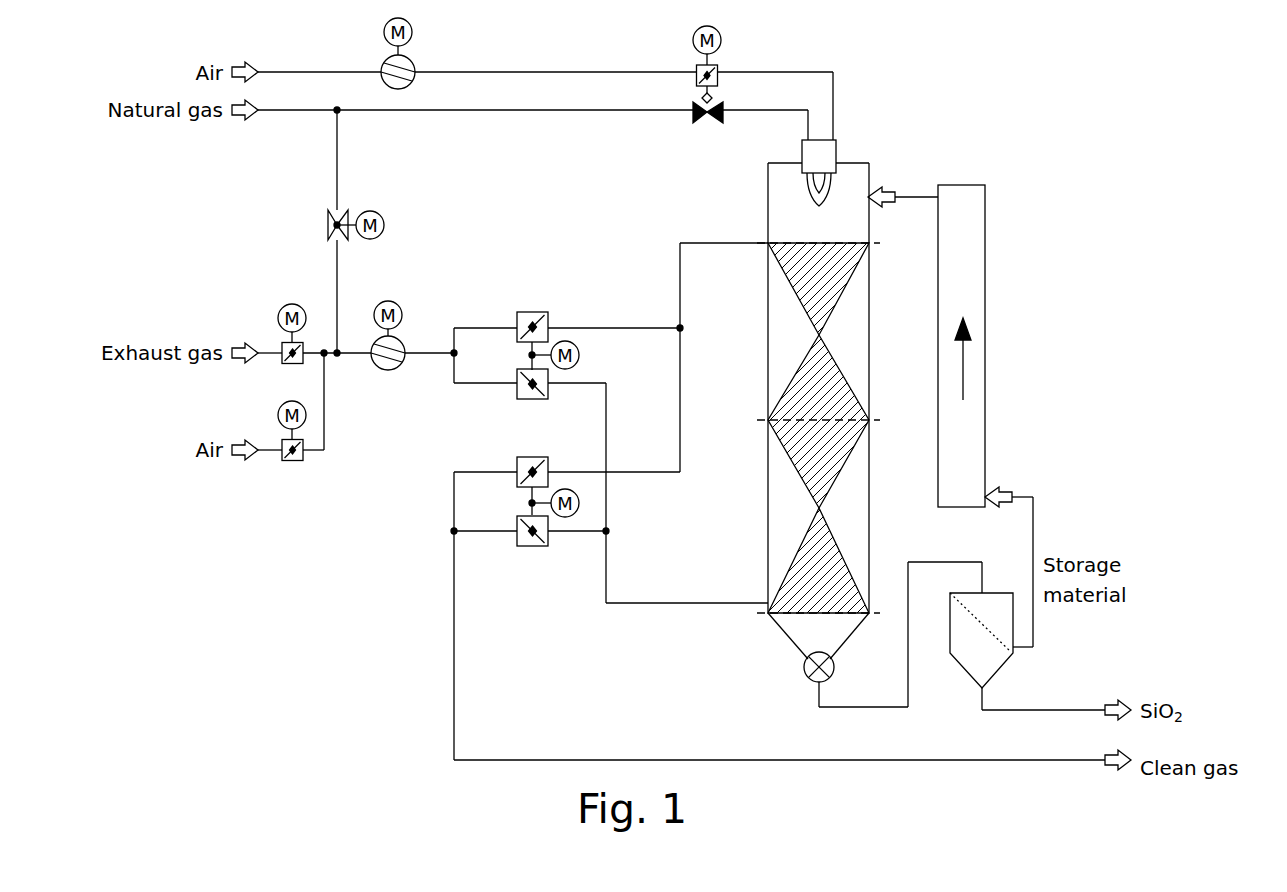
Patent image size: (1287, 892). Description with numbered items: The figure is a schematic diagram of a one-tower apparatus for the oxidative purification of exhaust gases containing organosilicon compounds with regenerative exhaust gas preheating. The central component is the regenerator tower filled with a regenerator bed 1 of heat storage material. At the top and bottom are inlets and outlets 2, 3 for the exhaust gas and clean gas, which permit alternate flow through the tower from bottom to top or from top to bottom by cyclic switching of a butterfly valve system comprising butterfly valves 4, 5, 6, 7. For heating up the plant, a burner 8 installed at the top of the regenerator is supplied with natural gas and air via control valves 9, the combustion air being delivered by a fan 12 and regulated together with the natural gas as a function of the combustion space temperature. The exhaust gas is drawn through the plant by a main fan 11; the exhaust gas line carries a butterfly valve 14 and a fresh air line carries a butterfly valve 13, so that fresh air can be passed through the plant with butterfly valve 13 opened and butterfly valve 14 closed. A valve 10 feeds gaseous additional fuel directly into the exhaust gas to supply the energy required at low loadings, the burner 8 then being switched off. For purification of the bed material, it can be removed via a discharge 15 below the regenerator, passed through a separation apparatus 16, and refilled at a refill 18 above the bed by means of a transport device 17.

The regenerator bed 1 is at (809, 411).
The inlet and outlet 2 is at (803, 289).
The inlet and outlet 3 is at (804, 560).
The butterfly valve 4 is at (516, 317).
The butterfly valve 5 is at (516, 372).
The butterfly valve 6 is at (516, 460).
The butterfly valve 7 is at (516, 519).
The burner 8 is at (804, 169).
The control valves 9 is at (692, 74).
The valve 10 is at (360, 208).
The main fan 11 is at (404, 335).
The fan 12 is at (417, 51).
The butterfly valve 13 is at (293, 448).
The butterfly valve 14 is at (291, 320).
The discharge 15 is at (880, 636).
The separation apparatus 16 is at (1027, 634).
The transport device 17 is at (985, 416).
The refill 18 is at (903, 182).